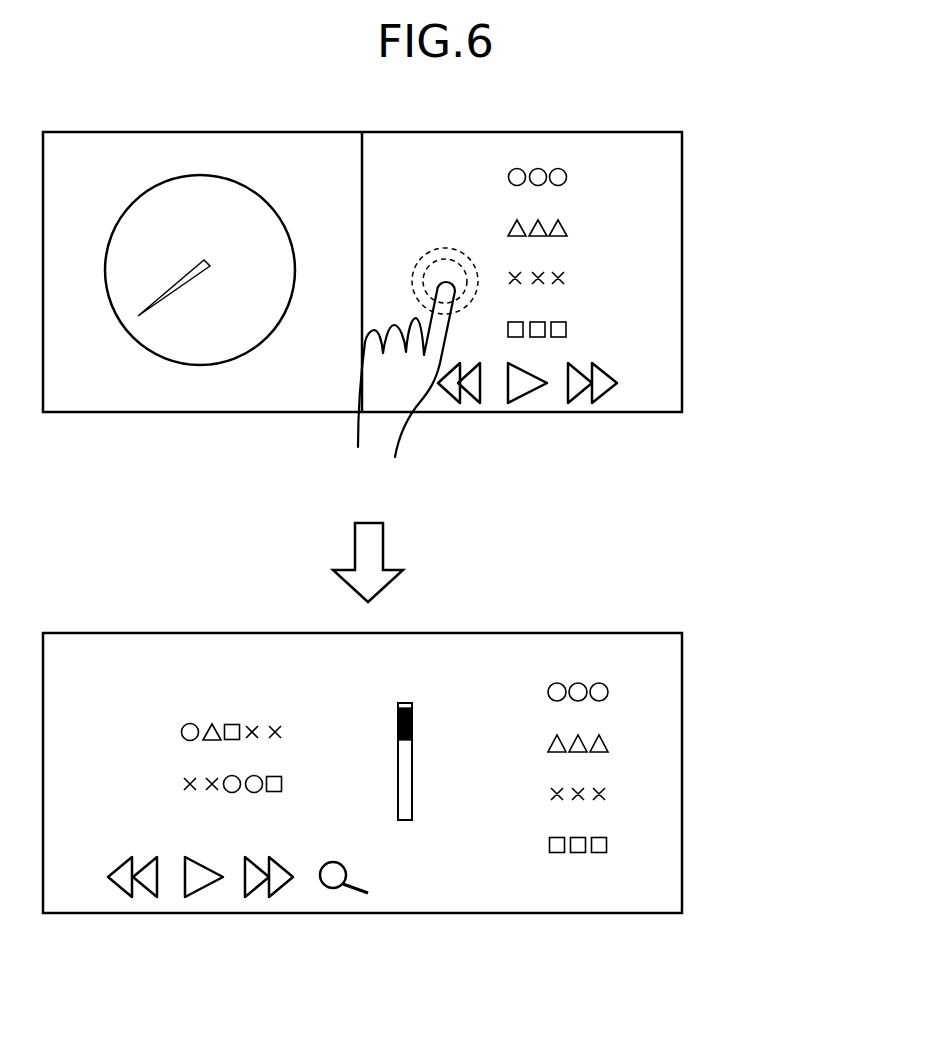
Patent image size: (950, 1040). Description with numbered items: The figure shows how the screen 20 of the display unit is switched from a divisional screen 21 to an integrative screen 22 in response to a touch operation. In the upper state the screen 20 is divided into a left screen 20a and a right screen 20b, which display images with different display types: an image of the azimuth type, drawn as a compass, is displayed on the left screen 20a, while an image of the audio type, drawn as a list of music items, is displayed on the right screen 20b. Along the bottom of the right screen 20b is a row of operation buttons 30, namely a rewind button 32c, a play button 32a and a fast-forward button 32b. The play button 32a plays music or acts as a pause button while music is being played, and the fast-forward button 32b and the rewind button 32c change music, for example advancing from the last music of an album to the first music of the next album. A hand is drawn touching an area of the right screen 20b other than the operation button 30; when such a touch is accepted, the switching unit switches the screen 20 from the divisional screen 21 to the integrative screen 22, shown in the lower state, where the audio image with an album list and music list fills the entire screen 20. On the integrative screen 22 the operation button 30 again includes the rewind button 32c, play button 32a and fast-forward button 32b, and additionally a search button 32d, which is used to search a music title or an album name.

The screen 20 is at (430, 506).
The divisional screen 21 is at (708, 141).
The integrative screen 22 is at (709, 652).
The left screen 20a is at (263, 132).
The right screen 20b is at (598, 132).
The operation button 30 is at (378, 682).
The play button 32a is at (528, 400).
The fast-forward button 32b is at (605, 400).
The rewind button 32c is at (467, 400).
The search button 32d is at (352, 893).